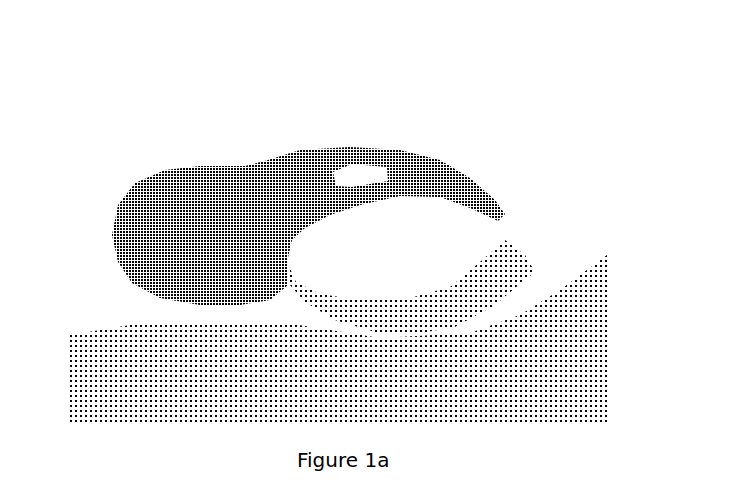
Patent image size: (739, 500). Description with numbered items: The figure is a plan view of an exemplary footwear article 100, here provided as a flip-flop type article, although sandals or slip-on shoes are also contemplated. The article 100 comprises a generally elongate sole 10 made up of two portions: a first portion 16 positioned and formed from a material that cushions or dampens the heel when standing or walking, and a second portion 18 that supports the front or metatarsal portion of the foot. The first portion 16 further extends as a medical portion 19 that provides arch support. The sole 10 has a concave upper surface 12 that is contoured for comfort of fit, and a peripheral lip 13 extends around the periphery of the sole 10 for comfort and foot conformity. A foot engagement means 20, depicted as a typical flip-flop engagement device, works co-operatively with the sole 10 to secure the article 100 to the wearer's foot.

The sole 10 is at (487, 157).
The concave upper surface 12 is at (476, 294).
The peripheral lip 13 is at (186, 168).
The first portion 16 is at (195, 287).
The second portion 18 is at (512, 267).
The medical portion 19 is at (347, 198).
The foot engagement means 20 is at (307, 165).
The footwear article 100 is at (583, 176).